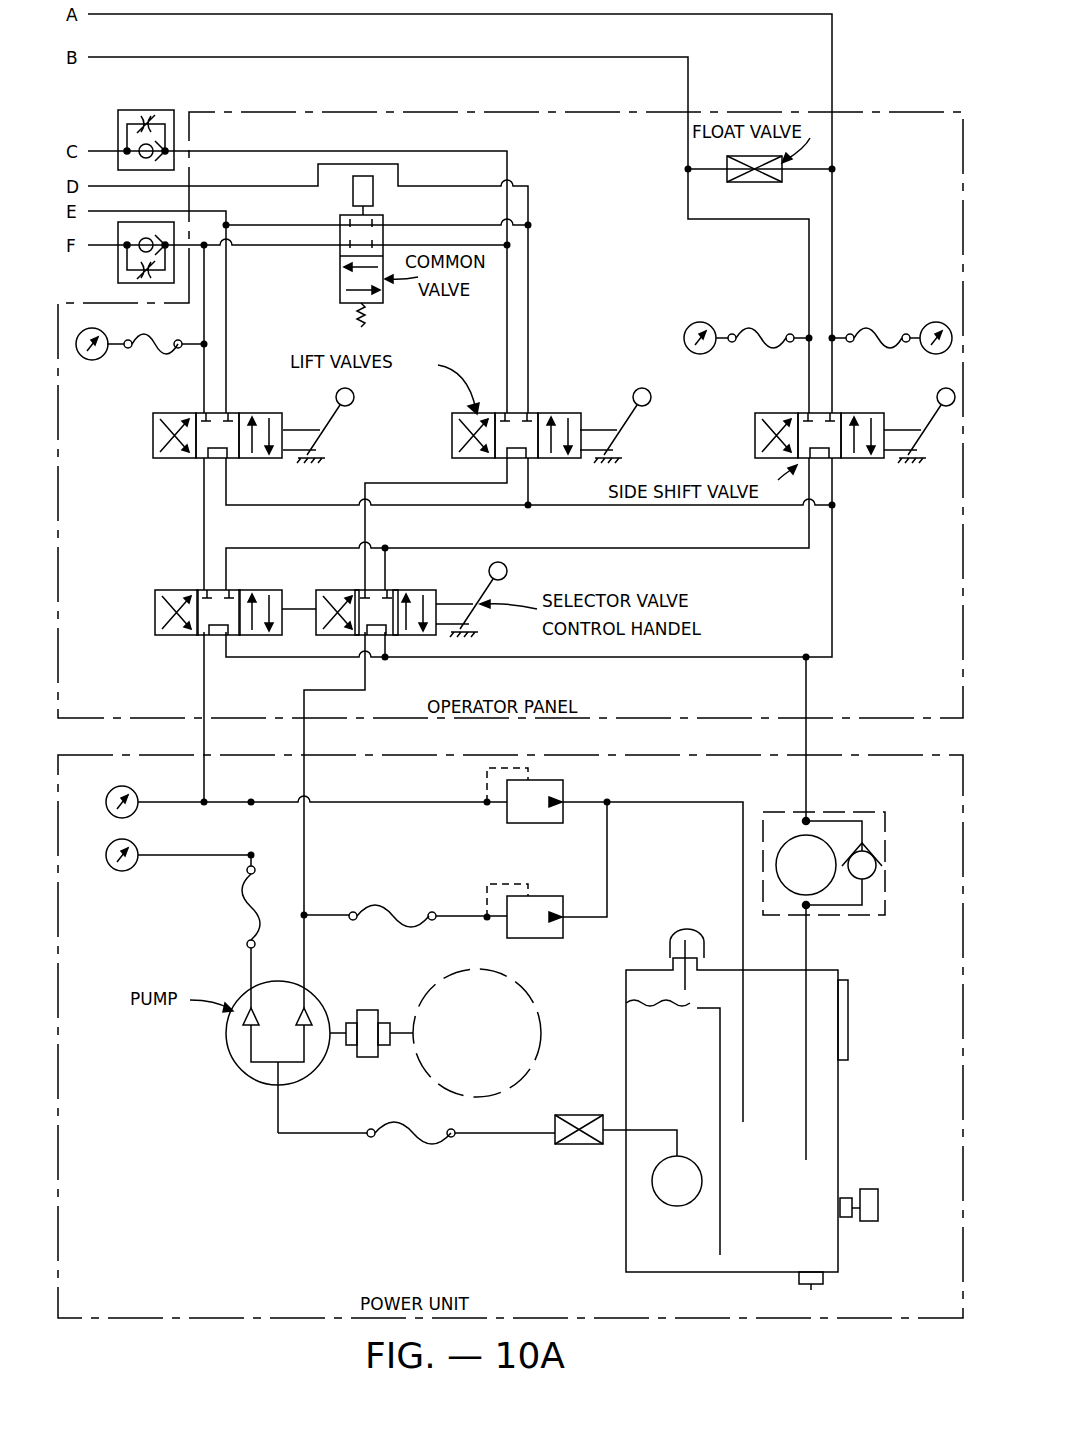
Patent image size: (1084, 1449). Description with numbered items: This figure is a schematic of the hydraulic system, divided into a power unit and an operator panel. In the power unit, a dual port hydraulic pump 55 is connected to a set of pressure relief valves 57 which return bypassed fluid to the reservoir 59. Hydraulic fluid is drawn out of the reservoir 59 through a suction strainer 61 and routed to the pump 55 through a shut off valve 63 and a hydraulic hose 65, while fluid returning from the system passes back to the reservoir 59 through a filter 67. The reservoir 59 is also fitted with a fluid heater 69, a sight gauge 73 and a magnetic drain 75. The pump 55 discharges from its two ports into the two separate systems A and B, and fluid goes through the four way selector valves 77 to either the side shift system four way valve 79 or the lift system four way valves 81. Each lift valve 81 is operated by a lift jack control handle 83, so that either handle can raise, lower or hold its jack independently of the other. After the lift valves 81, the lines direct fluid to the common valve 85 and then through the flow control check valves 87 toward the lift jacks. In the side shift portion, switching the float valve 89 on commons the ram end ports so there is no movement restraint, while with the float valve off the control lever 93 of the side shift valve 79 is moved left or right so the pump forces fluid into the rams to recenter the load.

The dual port hydraulic pump 55 is at (236, 1043).
The pressure relief valves 57 is at (530, 815).
The reservoir 59 is at (842, 1142).
The suction strainer 61 is at (663, 1194).
The shut off valve 63 is at (580, 1146).
The hydraulic hose 65 is at (404, 1159).
The filter 67 is at (877, 848).
The fluid heater 69 is at (870, 1222).
The sight gauge 73 is at (850, 1026).
The magnetic drain 75 is at (815, 1288).
The 4 way selector valves 77 is at (337, 590).
The side shift system 4 way valve 79 is at (775, 416).
The lift system 4 way valves 81 is at (184, 418).
The lift jack control handles 83 is at (354, 397).
The common valve 85 is at (340, 282).
The flow control check valves 87 is at (130, 117).
The float valve 89 is at (760, 183).
The control lever 93 is at (935, 397).